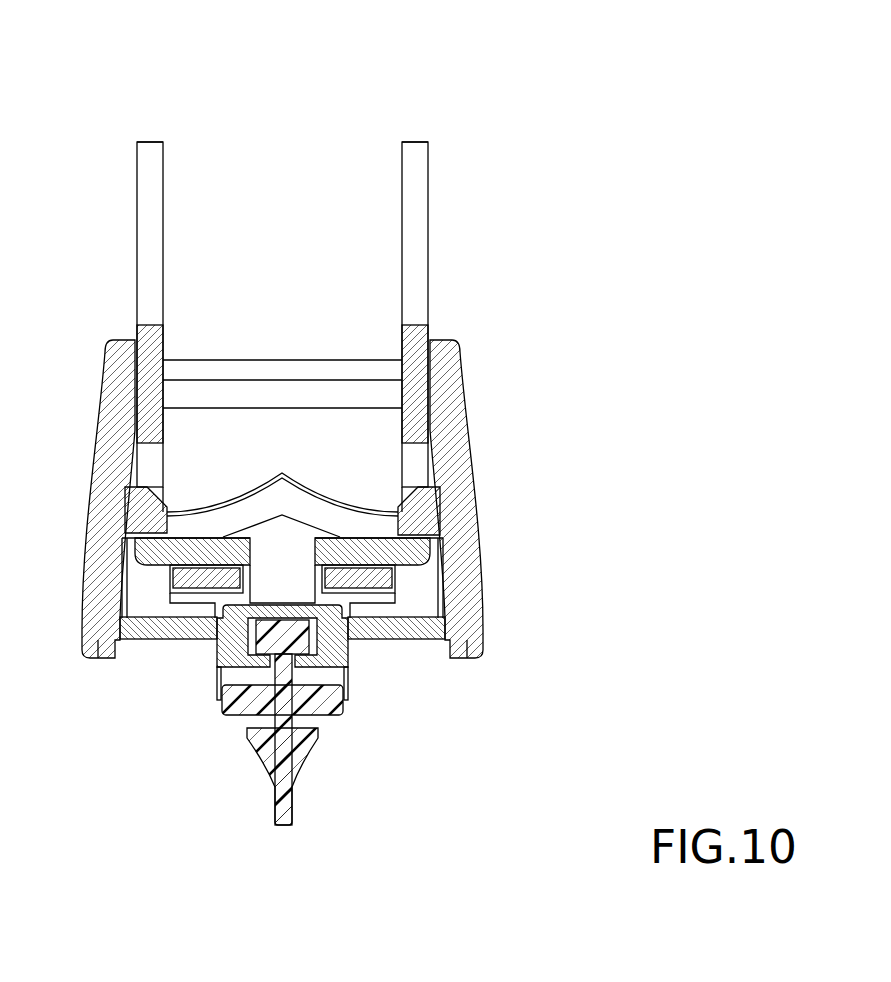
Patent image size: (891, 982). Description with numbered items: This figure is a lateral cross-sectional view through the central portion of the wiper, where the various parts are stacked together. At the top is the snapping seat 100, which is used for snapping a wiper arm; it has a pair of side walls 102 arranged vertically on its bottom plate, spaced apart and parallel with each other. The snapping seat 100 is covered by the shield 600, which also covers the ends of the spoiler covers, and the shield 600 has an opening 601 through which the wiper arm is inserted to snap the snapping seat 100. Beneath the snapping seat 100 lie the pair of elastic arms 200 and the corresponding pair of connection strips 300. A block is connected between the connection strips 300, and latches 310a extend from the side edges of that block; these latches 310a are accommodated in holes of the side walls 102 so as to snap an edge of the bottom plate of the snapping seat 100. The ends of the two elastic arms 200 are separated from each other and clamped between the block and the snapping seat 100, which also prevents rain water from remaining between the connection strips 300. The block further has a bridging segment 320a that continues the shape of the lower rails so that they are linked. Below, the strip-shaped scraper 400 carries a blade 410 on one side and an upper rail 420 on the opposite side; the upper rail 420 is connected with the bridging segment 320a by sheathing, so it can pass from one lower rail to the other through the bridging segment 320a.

The snapping seat 100 is at (437, 255).
The side wall 102 is at (422, 160).
The opening 601 is at (347, 243).
The shield 600 is at (457, 457).
The latch 310a is at (430, 510).
The elastic arm 200 is at (398, 577).
The connection strip 300 is at (162, 652).
The bridging segment 320a is at (232, 650).
The upper rail 420 is at (350, 643).
The blade 410 is at (298, 755).
The scraper 400 is at (295, 795).